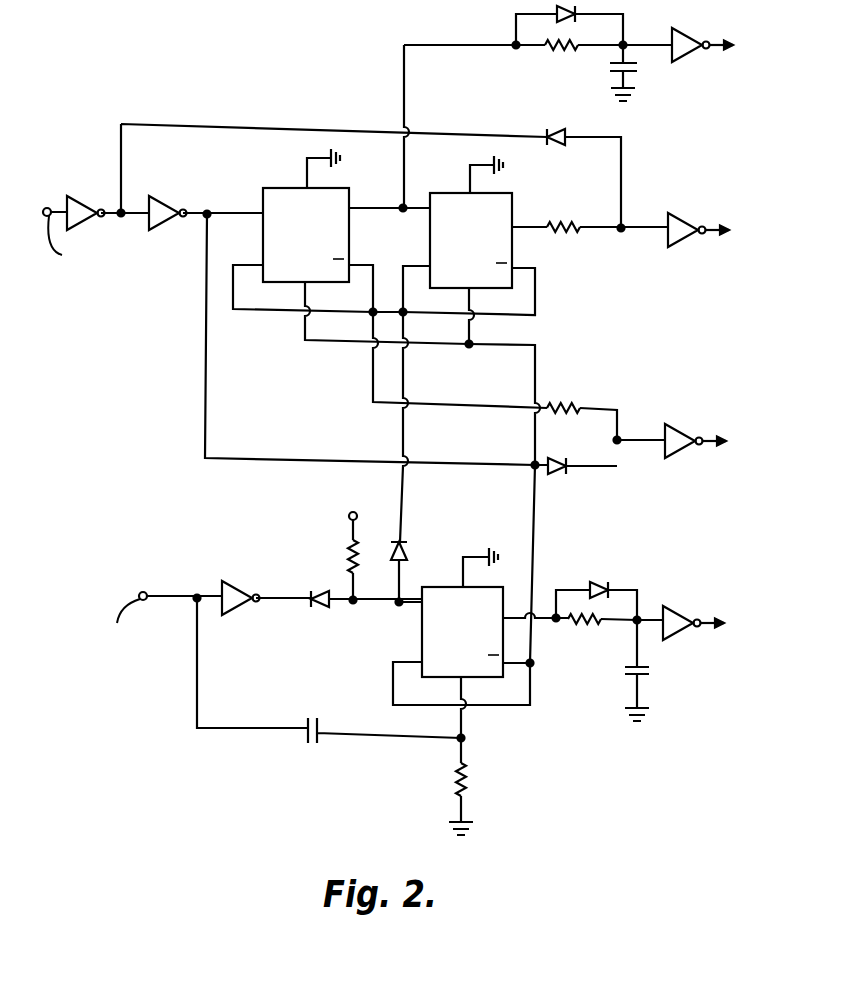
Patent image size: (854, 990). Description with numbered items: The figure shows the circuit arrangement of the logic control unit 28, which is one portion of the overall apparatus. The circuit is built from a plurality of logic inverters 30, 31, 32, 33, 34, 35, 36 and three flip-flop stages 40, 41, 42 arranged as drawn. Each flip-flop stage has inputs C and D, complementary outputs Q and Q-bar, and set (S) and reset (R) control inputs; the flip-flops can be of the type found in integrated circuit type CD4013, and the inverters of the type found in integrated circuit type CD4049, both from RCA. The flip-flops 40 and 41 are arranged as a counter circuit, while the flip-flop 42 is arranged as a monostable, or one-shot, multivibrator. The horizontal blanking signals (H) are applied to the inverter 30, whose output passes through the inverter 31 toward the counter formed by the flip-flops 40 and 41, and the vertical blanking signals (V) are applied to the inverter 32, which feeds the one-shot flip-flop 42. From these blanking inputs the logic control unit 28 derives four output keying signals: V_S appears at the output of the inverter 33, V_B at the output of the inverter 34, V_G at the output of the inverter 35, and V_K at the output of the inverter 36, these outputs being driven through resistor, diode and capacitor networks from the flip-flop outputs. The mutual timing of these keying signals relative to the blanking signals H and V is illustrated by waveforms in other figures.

The logic control unit 28 is at (207, 796).
The logic inverter 30 is at (86, 173).
The logic inverter 31 is at (170, 177).
The logic inverter 32 is at (246, 565).
The logic inverter 33 is at (701, 12).
The logic inverter 34 is at (683, 213).
The logic inverter 35 is at (672, 424).
The logic inverter 36 is at (689, 592).
The flip-flop 40 is at (283, 186).
The flip-flop 41 is at (447, 191).
The flip-flop 42 is at (440, 586).